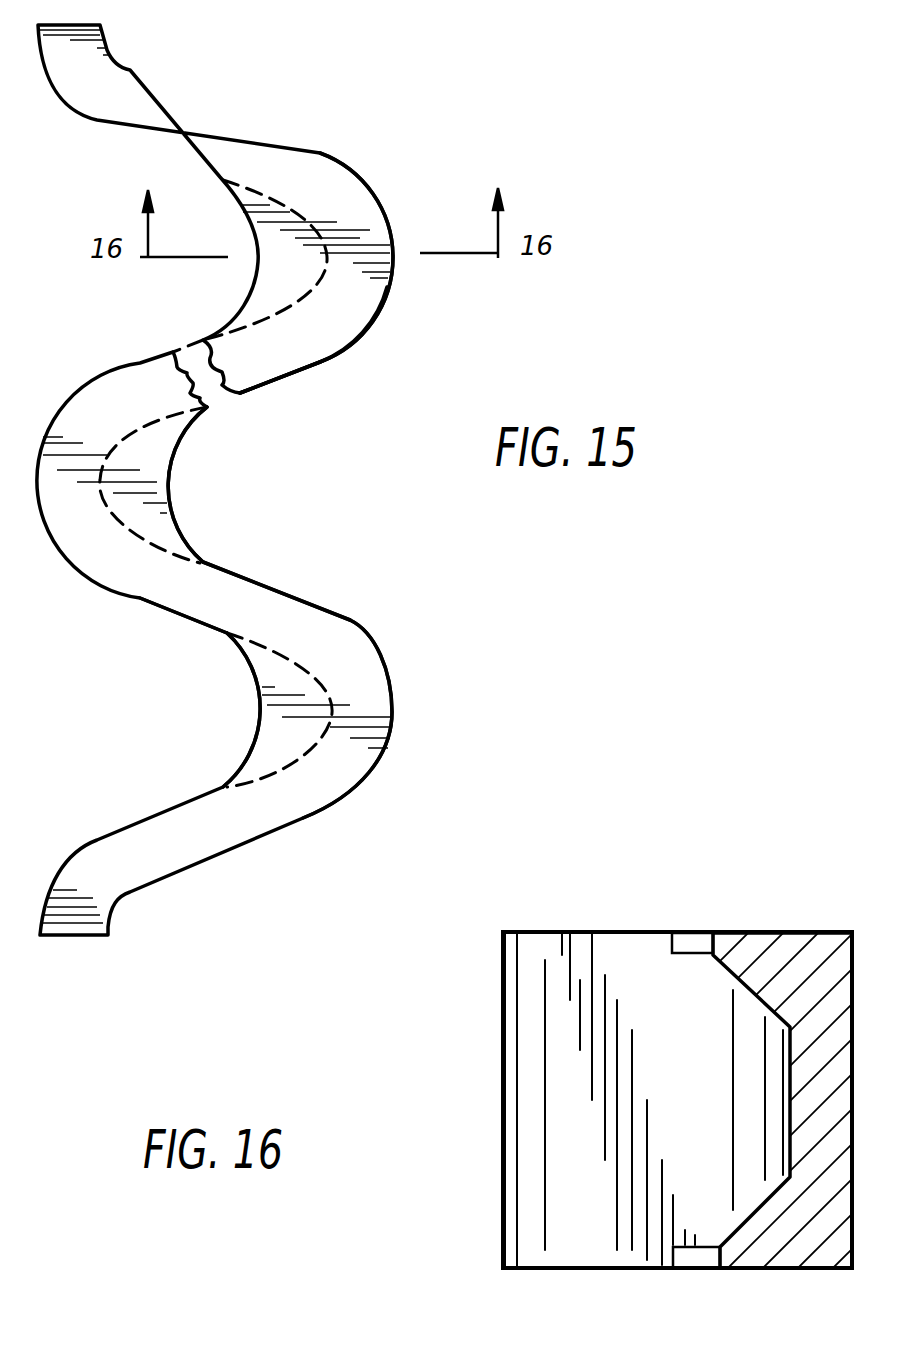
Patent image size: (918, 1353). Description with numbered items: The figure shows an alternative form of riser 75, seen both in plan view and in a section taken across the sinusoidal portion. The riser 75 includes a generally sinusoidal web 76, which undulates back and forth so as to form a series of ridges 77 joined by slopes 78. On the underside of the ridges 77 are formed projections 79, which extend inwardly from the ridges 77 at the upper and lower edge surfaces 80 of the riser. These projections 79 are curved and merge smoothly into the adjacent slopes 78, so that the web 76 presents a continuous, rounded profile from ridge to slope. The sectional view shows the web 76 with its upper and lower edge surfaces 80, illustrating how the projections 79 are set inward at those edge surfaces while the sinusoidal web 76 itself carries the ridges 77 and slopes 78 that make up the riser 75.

In FIG. 15, the riser 75 is at (283, 852).
In FIG. 16, the riser 75 is at (619, 905).
In FIG. 15, the generally sinusoidal web 76 is at (335, 372).
In FIG. 16, the generally sinusoidal web 76 is at (688, 1051).
In FIG. 15, the ridges 77 is at (392, 287).
In FIG. 15, the slopes 78 is at (273, 382).
In FIG. 15, the projections 79 is at (155, 475).
In FIG. 16, the upper and lower edge surfaces 80 is at (783, 938).